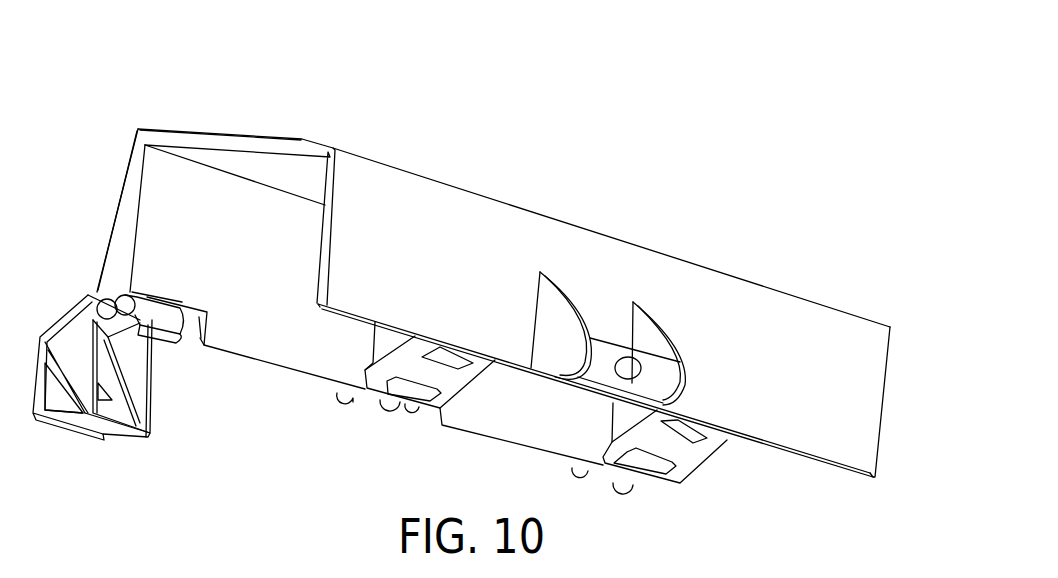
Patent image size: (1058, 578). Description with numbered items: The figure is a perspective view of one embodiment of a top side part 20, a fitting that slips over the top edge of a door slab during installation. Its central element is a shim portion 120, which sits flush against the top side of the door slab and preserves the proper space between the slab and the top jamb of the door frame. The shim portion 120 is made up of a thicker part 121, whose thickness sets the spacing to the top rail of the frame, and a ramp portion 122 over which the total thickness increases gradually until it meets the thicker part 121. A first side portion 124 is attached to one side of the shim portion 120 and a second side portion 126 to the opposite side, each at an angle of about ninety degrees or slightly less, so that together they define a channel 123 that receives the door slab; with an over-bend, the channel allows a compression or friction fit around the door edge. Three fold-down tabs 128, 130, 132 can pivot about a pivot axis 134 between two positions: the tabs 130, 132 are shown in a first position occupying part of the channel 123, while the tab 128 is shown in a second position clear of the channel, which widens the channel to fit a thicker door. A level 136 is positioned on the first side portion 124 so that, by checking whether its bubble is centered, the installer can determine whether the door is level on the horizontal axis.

The top side part 20 is at (558, 145).
The shim portion 120 is at (242, 130).
The thicker part 121 is at (167, 130).
The ramp portion 122 is at (334, 147).
The channel 123 is at (285, 340).
The first side portion 124 is at (882, 430).
The second side portion 126 is at (121, 189).
The fold-down tab 128 is at (49, 332).
The fold-down tab 130 is at (452, 383).
The fold-down tab 132 is at (690, 453).
The pivot axis 134 is at (107, 290).
The level 136 is at (611, 343).